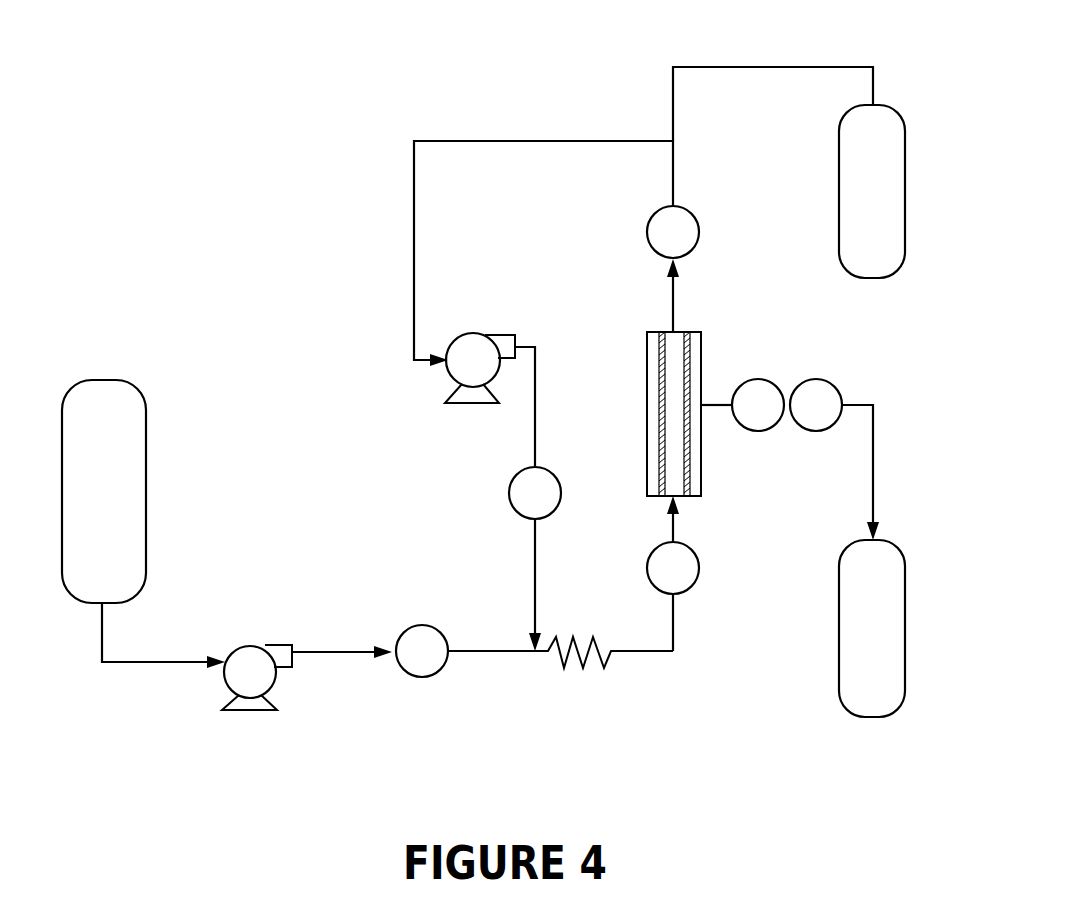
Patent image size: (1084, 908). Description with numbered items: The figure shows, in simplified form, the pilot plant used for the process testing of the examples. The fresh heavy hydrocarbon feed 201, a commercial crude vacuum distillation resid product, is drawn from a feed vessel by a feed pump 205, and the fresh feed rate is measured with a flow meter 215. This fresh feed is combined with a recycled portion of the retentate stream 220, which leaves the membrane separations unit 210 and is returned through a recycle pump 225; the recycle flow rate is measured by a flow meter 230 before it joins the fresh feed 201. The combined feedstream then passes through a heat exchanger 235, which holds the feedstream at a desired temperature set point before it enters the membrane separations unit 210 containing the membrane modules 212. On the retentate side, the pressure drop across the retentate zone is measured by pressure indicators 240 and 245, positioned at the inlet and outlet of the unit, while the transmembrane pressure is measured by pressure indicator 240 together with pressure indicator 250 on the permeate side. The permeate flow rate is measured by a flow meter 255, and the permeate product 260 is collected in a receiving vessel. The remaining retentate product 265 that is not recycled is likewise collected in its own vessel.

The fresh heavy hydrocarbon feed 201 is at (143, 675).
The feed pump 205 is at (264, 720).
The membrane separations unit 210 is at (707, 348).
The membrane module 212 is at (660, 433).
The flow meter 215 is at (430, 667).
The retentate stream 220 is at (407, 262).
The recycle pump 225 is at (428, 400).
The flow meter 230 is at (548, 460).
The heat exchanger 235 is at (587, 673).
The pressure indicator 240 is at (702, 567).
The pressure indicator 245 is at (703, 210).
The pressure indicator 250 is at (772, 368).
The flow meter 255 is at (847, 380).
The permeate product 260 is at (876, 510).
The retentate product 265 is at (765, 60).